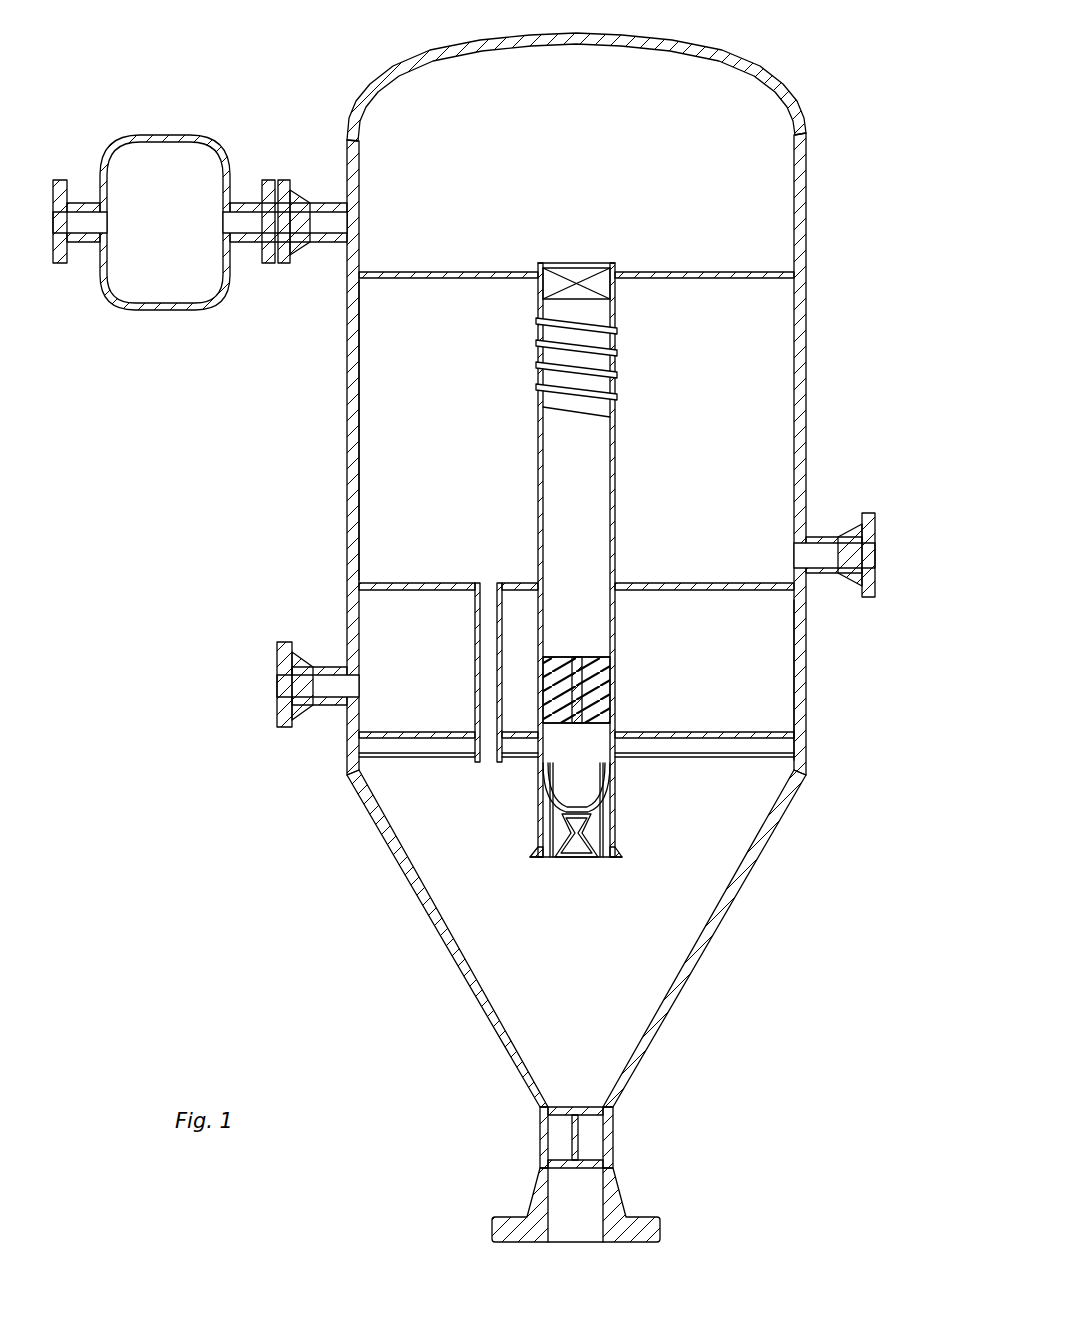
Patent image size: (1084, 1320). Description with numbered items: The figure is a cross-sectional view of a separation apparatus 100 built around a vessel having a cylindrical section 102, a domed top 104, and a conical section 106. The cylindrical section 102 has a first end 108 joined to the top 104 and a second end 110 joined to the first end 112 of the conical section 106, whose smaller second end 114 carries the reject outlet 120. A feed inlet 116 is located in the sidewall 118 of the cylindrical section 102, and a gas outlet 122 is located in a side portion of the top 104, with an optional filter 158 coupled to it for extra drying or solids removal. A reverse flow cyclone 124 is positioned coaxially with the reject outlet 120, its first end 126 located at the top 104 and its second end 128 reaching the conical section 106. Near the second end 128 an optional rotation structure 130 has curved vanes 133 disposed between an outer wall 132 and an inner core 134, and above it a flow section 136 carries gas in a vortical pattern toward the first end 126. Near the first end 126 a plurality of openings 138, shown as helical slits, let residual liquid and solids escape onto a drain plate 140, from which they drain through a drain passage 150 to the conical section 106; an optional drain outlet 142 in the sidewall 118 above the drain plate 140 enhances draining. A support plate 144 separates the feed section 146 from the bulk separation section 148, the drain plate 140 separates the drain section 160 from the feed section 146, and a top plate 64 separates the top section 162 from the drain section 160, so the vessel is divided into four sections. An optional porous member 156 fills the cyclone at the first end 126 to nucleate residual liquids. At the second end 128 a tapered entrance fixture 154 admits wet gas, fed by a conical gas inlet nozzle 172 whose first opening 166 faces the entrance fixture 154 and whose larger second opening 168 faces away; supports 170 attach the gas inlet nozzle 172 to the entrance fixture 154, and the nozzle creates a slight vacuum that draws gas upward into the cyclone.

The separation apparatus 100 is at (216, 17).
The cylindrical section 102 is at (347, 352).
The top 104 is at (437, 56).
The conical section 106 is at (708, 958).
The first end 108 is at (806, 385).
The second end 110 is at (806, 722).
The first end 112 is at (368, 808).
The second end 114 is at (614, 1140).
The feed inlet 116 is at (277, 665).
The sidewall 118 is at (360, 408).
The reject outlet 120 is at (660, 1232).
The gas outlet 122 is at (283, 178).
The reverse flow cyclone 124 is at (612, 400).
The first end 126 is at (644, 243).
The second end 128 is at (528, 795).
The rotation structure 130 is at (605, 659).
The outer wall 132 is at (614, 698).
The curved vanes 133 is at (600, 725).
The inner core 134 is at (572, 656).
The flow section 136 is at (614, 460).
The openings 138 is at (612, 345).
The drain plate 140 is at (712, 580).
The drain outlet 142 is at (878, 535).
The support plate 144 is at (762, 731).
The feed section 146 is at (692, 654).
The bulk separation section 148 is at (560, 1006).
The drain passage 150 is at (476, 637).
The entrance fixture 154 is at (540, 855).
The porous member 156 is at (575, 290).
The filter 158 is at (165, 133).
The drain section 160 is at (432, 486).
The top section 162 is at (560, 131).
The first opening 166 is at (600, 822).
The second opening 168 is at (560, 862).
The supports 170 is at (549, 825).
The gas inlet nozzle 172 is at (607, 862).
The top plate 64 is at (418, 270).